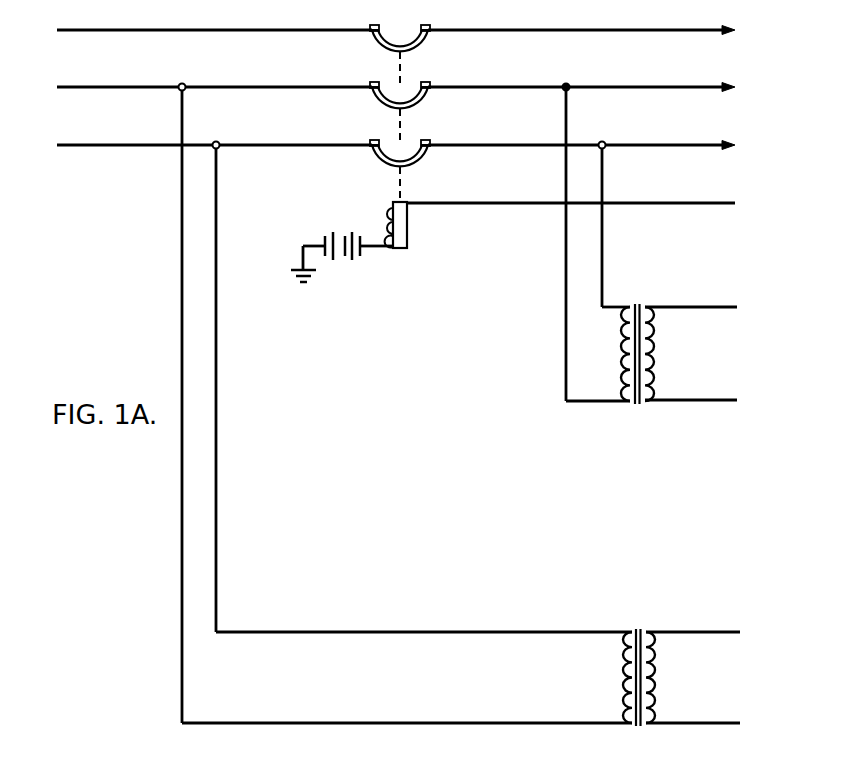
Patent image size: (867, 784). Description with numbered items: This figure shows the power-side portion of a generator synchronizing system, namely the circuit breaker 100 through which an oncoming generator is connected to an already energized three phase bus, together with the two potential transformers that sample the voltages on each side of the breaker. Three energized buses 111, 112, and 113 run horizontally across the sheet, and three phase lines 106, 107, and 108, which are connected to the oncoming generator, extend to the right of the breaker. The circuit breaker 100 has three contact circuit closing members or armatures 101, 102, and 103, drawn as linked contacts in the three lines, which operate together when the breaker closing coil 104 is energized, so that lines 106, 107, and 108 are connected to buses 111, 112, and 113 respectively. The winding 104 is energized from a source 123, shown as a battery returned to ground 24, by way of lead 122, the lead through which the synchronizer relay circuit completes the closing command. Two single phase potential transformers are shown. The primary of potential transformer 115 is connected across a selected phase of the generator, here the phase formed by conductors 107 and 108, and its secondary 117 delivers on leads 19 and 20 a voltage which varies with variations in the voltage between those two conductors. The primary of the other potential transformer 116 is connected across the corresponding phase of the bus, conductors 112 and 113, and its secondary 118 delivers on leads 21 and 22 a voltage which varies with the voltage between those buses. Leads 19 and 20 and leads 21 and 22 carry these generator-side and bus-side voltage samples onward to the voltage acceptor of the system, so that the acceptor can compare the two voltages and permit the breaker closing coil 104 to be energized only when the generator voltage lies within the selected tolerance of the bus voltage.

The energized bus 111 is at (134, 29).
The energized bus 112 is at (139, 86).
The energized bus 113 is at (139, 144).
The contact circuit closing member 101 is at (426, 44).
The contact circuit closing member 102 is at (426, 101).
The contact circuit closing member 103 is at (426, 159).
The breaker closing coil 104 is at (408, 220).
The circuit breaker 100 is at (444, 270).
The source 123 is at (349, 212).
The ground 24 is at (308, 279).
The three phase line 106 is at (663, 29).
The three phase line 107 is at (657, 86).
The three phase line 108 is at (664, 144).
The lead 122 is at (718, 204).
The potential transformer 115 is at (618, 362).
The secondary 117 is at (652, 353).
The lead 19 is at (699, 306).
The lead 20 is at (699, 401).
The potential transformer 116 is at (612, 691).
The secondary 118 is at (653, 685).
The lead 21 is at (702, 631).
The lead 22 is at (706, 706).